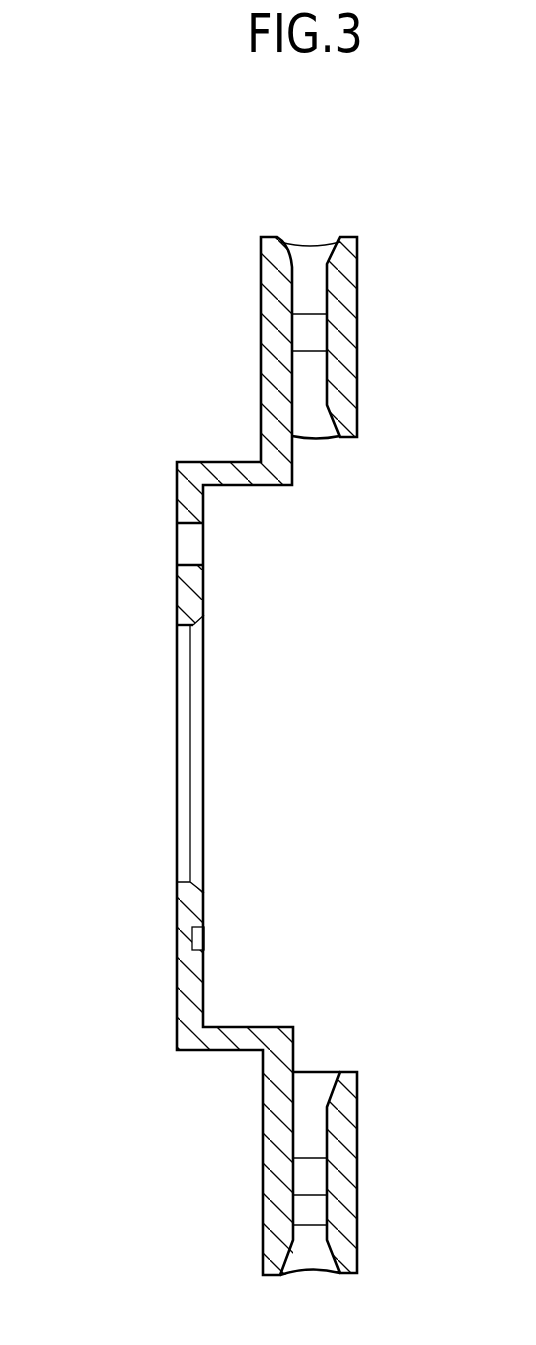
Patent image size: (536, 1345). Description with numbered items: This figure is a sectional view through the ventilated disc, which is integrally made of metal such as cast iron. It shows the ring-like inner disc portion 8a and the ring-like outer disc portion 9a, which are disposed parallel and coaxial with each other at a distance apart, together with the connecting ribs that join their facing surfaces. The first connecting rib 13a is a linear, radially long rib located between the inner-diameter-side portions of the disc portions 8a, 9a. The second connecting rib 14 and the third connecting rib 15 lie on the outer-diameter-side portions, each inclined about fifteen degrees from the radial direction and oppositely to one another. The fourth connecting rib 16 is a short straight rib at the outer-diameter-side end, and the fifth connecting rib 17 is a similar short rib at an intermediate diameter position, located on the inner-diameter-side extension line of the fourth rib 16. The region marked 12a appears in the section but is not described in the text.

The inner disc portion 8a is at (272, 333).
The outer disc portion 9a is at (342, 292).
The annular groove 12a is at (188, 587).
The first connecting rib 13a is at (312, 388).
The second connecting rib 14 is at (306, 265).
The third connecting rib 15 is at (313, 1210).
The fourth connecting rib 16 is at (313, 1247).
The fifth connecting rib 17 is at (310, 332).